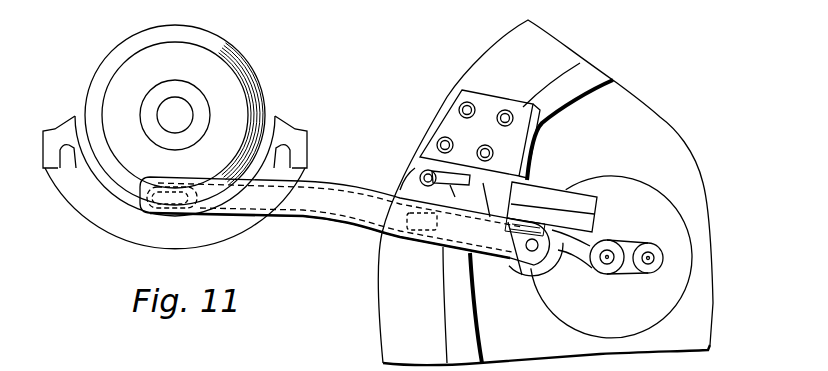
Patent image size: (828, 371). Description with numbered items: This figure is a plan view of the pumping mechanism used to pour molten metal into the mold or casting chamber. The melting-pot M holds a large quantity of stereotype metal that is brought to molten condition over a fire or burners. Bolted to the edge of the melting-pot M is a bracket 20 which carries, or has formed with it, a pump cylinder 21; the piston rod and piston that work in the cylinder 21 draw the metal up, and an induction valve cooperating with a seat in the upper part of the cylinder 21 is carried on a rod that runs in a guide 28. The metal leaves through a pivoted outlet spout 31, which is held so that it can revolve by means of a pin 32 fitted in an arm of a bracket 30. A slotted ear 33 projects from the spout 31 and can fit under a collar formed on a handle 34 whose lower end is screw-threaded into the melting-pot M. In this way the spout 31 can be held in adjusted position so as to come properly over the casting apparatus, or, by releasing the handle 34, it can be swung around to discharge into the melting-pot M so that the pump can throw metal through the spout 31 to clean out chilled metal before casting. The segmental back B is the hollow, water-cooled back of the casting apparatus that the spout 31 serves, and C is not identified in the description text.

The brake drum wheel C is at (218, 57).
The segmental back B is at (85, 210).
The melting-pot M is at (675, 143).
The bracket 20 is at (450, 118).
The pump cylinder 21 is at (667, 223).
The guide 28 is at (637, 270).
The bracket 30 is at (547, 237).
The pivoted outlet spout 31 is at (318, 223).
The pin 32 is at (530, 247).
The slotted ear 33 is at (415, 195).
The handle 34 is at (453, 178).